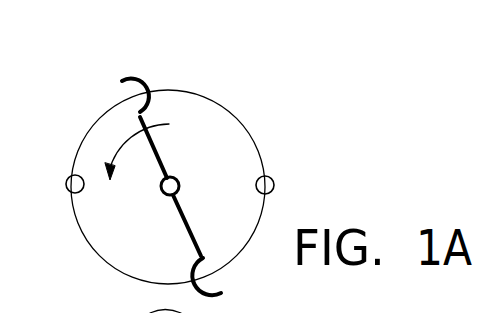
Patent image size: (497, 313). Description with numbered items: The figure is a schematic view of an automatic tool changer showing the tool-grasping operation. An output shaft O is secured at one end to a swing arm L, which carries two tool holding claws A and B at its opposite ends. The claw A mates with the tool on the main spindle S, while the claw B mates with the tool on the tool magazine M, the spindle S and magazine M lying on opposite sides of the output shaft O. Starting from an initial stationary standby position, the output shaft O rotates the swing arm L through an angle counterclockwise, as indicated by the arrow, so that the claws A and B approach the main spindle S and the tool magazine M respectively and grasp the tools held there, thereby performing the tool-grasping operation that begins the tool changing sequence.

The tool holding claw A is at (134, 95).
The tool holding claw B is at (206, 276).
The swing arm L is at (152, 158).
The output shaft O is at (180, 181).
The tool magazine M is at (273, 177).
The main spindle S is at (70, 187).